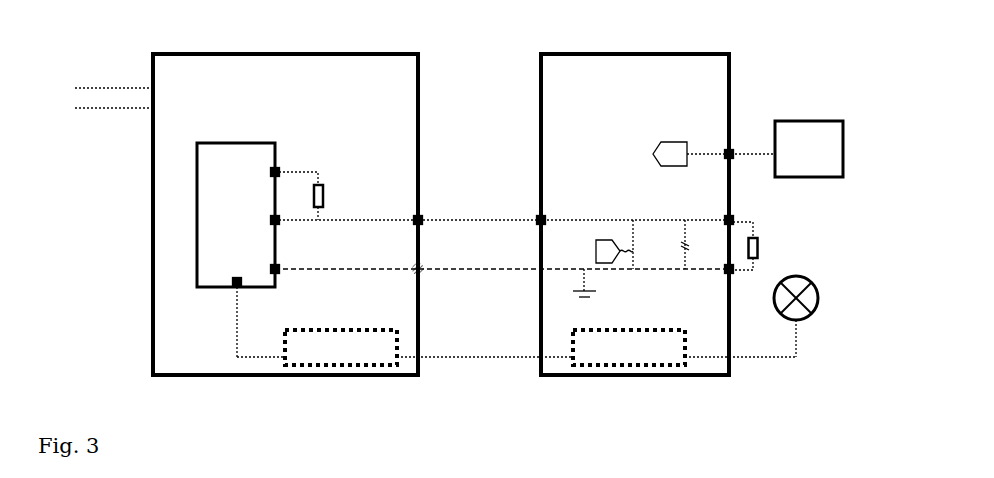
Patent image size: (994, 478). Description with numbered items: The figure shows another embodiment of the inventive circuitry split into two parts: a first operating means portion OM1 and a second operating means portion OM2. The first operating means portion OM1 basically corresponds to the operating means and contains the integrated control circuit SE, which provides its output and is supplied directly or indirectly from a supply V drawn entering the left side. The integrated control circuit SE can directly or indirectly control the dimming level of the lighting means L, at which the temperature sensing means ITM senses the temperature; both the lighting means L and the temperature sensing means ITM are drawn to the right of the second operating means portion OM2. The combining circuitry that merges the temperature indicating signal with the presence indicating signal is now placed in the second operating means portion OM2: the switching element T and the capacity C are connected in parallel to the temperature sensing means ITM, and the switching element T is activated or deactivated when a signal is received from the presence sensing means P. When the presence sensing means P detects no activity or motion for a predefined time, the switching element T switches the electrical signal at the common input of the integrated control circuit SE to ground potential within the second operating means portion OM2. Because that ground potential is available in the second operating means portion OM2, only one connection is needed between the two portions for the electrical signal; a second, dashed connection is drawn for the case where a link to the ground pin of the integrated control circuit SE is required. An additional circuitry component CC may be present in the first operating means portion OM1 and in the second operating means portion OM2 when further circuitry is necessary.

The first operating means portion OM1 is at (383, 54).
The second operating means portion OM2 is at (650, 54).
The supply V is at (99, 98).
The integrated control circuit SE is at (238, 215).
The presence sensing means P is at (748, 149).
The switching element T is at (624, 244).
The capacity C is at (690, 244).
The temperature sensing means ITM is at (766, 246).
The lighting means L is at (802, 316).
The additional circuitry component CC is at (516, 326).